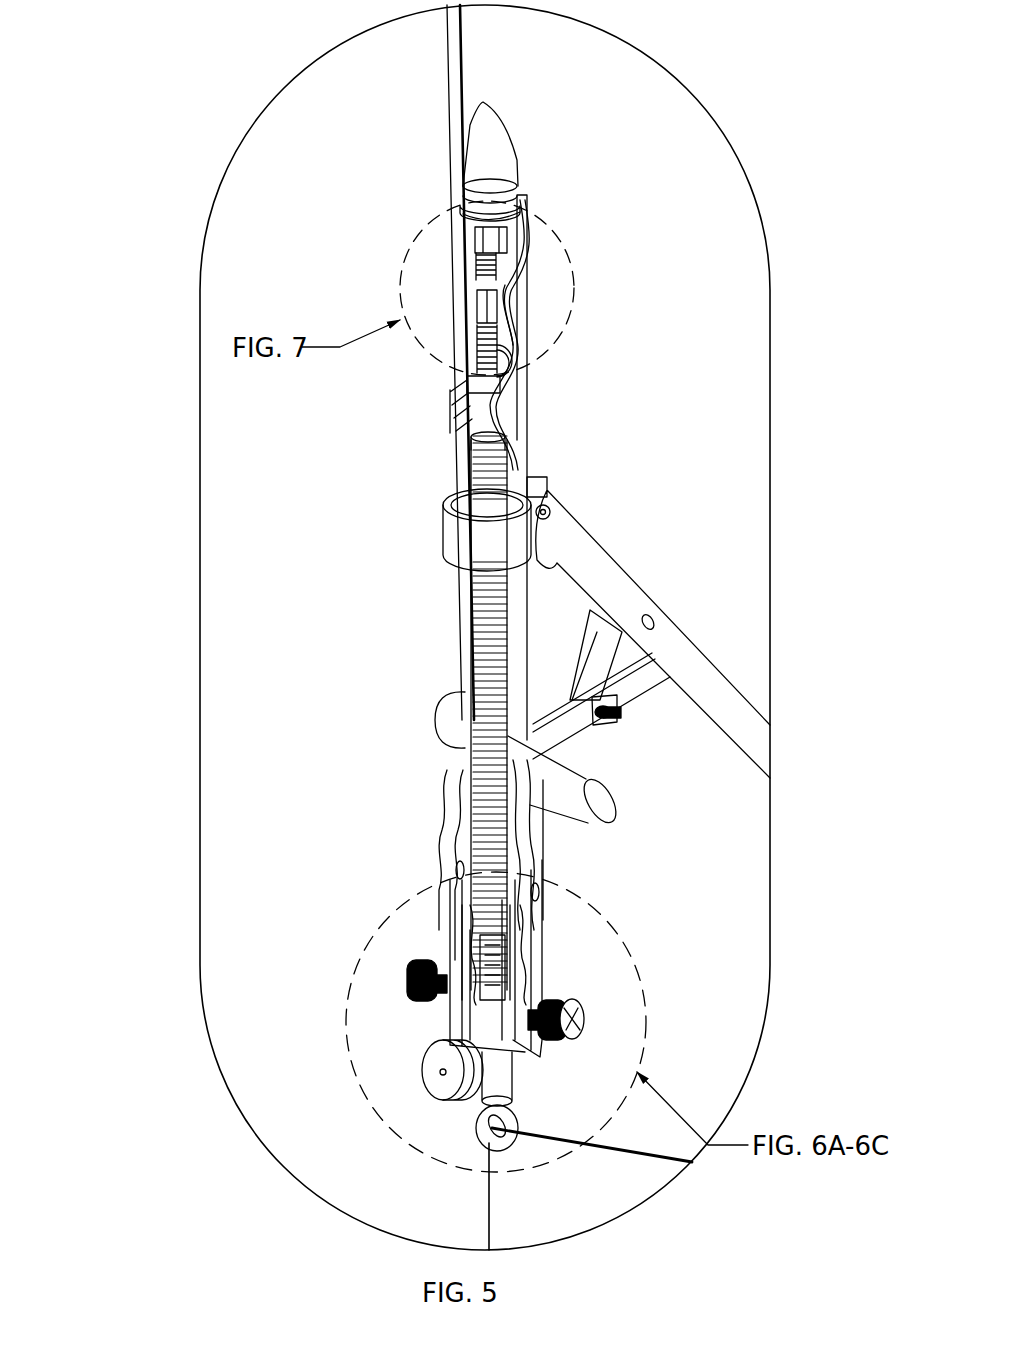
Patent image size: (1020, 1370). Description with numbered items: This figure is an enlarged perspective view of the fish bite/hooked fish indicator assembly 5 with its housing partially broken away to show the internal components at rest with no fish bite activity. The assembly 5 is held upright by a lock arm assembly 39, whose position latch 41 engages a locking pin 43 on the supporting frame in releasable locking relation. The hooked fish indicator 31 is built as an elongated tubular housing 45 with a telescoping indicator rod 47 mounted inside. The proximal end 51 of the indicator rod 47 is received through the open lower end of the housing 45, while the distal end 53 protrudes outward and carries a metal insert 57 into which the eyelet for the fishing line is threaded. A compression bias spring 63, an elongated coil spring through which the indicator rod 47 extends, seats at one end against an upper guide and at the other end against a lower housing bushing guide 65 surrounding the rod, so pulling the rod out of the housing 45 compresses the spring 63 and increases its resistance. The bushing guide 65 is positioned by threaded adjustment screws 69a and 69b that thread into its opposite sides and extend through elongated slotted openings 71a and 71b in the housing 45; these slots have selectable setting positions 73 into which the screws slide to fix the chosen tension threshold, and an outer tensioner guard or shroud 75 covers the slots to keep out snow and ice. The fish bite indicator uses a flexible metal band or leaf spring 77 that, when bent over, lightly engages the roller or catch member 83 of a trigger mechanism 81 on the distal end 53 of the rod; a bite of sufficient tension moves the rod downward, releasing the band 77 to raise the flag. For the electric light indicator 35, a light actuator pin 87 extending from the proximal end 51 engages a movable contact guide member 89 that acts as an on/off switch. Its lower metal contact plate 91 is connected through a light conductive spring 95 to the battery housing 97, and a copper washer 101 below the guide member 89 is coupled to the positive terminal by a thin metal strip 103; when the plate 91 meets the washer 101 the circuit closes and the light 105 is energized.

The fish bite/hooked fish indicator assembly 5 is at (195, 180).
The hooked fish indicator 31 is at (418, 833).
The electric light indicator 35 is at (613, 250).
The lock arm assembly 39 is at (640, 682).
The position latch 41 is at (605, 640).
The locking pin 43 is at (560, 548).
The tubular housing 45 is at (458, 598).
The indicator rod 47 is at (505, 1082).
The proximal end 51 is at (520, 398).
The distal end 53 is at (483, 1118).
The metal insert 57 is at (512, 1103).
The compression bias spring 63 is at (478, 678).
The lower housing bushing guide 65 is at (480, 1014).
The threaded adjustment screw 69a is at (578, 1016).
The threaded adjustment screw 69b is at (420, 975).
The elongated slotted opening 71a is at (520, 992).
The elongated slotted opening 71b is at (470, 935).
The selectable setting positions 73 is at (530, 990).
The outer tensioner guard or shroud 75 is at (540, 835).
The flexible band or leaf spring 77 is at (453, 125).
The trigger mechanism 81 is at (420, 1095).
The roller or catch member 83 is at (430, 1070).
The light actuator pin 87 is at (502, 343).
The contact guide member 89 is at (492, 303).
The lower metal contact plate 91 is at (510, 308).
The light conductive spring 95 is at (498, 258).
The battery housing 97 is at (523, 216).
The copper washer 101 is at (470, 378).
The thin metal strip 103 is at (470, 240).
The light 105 is at (483, 138).